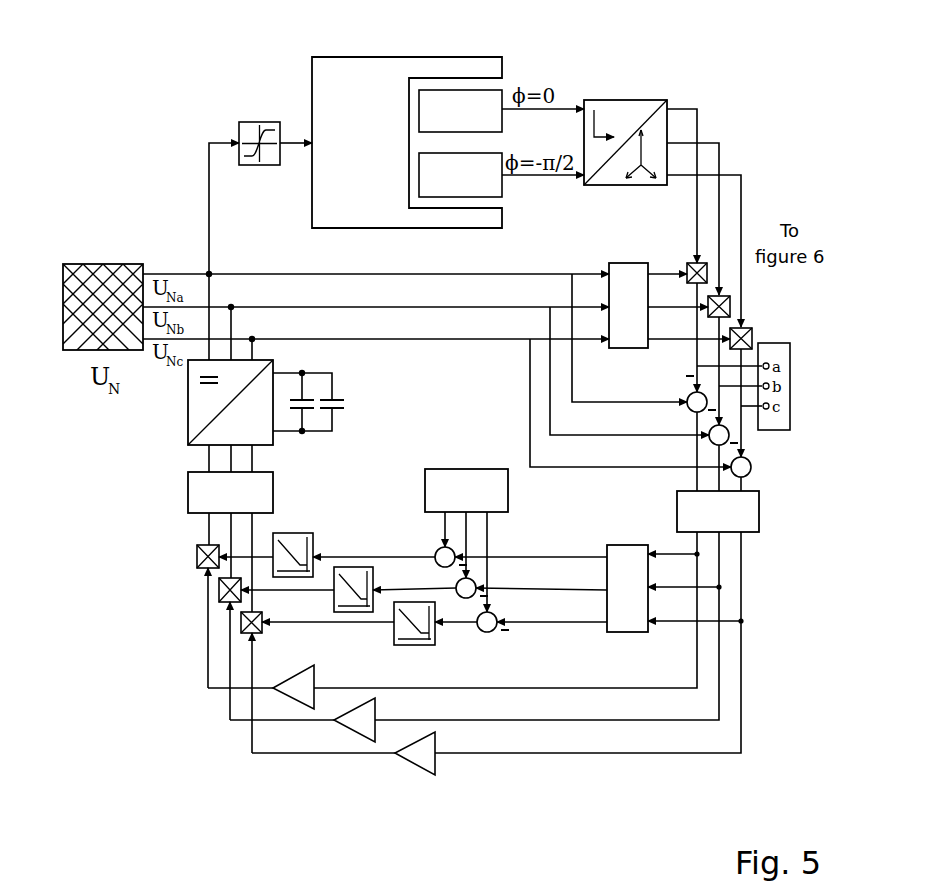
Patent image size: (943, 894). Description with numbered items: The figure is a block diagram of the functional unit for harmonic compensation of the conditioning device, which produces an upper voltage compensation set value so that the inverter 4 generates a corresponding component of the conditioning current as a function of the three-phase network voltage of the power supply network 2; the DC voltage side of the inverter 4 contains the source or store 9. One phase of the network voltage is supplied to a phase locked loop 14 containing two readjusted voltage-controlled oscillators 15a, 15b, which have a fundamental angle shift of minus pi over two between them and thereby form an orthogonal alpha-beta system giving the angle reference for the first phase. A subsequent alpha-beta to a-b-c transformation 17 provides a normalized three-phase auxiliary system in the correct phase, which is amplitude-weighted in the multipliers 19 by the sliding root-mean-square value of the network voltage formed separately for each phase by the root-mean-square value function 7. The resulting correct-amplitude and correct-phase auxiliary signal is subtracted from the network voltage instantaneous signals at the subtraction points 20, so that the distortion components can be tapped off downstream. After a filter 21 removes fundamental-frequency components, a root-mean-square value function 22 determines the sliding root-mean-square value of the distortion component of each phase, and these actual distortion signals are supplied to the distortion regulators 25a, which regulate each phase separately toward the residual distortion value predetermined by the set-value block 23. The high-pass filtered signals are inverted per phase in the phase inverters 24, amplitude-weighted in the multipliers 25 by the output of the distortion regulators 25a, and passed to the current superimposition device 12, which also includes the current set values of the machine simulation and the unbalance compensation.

The power supply network 2 is at (100, 264).
The inverter 4 is at (188, 396).
The root-mean-square value function 7 is at (624, 263).
The source or store 9 is at (332, 418).
The current superimposition device 12 is at (188, 488).
The phase locked loop 14 is at (312, 60).
The voltage-controlled oscillator 15a is at (502, 84).
The voltage-controlled oscillator 15b is at (502, 204).
The alpha-beta to a-b-c transformation 17 is at (622, 100).
The multipliers 19 is at (733, 310).
The subtraction points 20 is at (751, 460).
The filter 21 is at (752, 532).
The root-mean-square value function 22 is at (620, 545).
The set-value block 23 is at (480, 469).
The phase inverters 24 is at (354, 742).
The multipliers 25 is at (219, 590).
The distortion regulators 25a is at (356, 567).